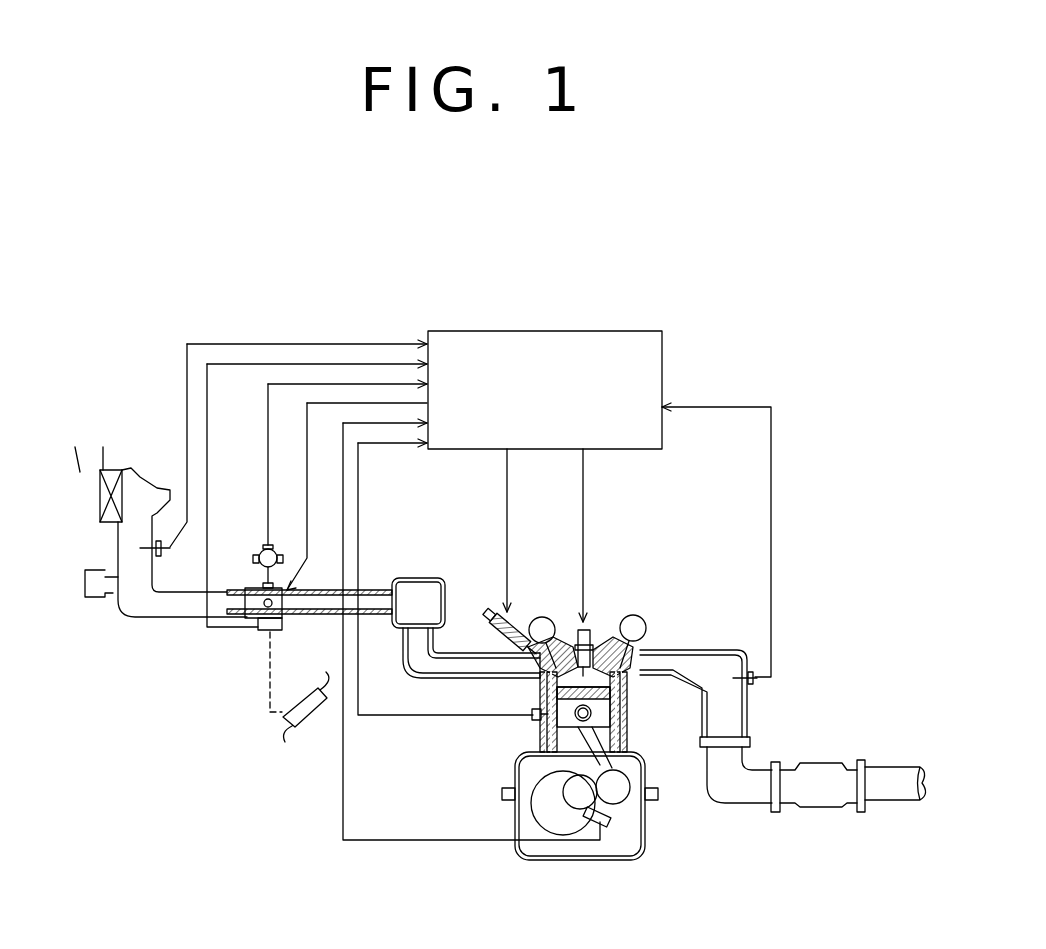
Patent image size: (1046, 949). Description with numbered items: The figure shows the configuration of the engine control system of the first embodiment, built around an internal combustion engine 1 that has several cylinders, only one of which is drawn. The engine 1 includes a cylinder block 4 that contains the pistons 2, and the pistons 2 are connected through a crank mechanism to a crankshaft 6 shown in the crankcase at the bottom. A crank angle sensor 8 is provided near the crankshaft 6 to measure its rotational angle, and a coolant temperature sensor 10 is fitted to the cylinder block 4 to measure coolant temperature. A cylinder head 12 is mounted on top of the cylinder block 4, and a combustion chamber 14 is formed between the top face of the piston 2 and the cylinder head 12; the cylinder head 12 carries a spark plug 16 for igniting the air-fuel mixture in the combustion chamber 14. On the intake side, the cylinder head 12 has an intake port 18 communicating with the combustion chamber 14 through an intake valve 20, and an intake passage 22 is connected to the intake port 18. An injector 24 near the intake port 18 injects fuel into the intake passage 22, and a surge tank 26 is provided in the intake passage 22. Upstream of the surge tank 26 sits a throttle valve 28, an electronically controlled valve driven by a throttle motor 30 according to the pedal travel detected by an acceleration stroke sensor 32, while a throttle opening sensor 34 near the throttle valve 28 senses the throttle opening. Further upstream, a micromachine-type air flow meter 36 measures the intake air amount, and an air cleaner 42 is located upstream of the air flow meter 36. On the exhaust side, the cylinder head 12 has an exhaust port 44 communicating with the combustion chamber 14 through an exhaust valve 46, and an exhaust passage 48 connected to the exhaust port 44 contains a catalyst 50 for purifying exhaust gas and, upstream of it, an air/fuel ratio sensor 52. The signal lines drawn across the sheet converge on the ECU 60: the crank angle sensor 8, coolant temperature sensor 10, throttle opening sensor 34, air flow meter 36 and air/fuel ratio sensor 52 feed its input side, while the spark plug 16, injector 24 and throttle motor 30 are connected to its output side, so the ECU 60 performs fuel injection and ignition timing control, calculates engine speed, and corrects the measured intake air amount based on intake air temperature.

The internal combustion engine 1 is at (631, 860).
The piston 2 is at (627, 737).
The cylinder block 4 is at (547, 740).
The crankshaft 6 is at (558, 780).
The crank angle sensor 8 is at (608, 810).
The coolant temperature sensor 10 is at (540, 715).
The cylinder head 12 is at (548, 618).
The combustion chamber 14 is at (630, 697).
The spark plug 16 is at (604, 614).
The intake port 18 is at (543, 670).
The intake valve 20 is at (487, 665).
The intake passage 22 is at (415, 677).
The injector 24 is at (503, 618).
The surge tank 26 is at (422, 580).
The throttle valve 28 is at (282, 613).
The throttle motor 30 is at (237, 600).
The acceleration stroke sensor 32 is at (262, 630).
The throttle opening sensor 34 is at (262, 548).
The air flow meter 36 is at (161, 554).
The air cleaner 42 is at (116, 468).
The exhaust port 44 is at (679, 654).
The exhaust valve 46 is at (645, 655).
The exhaust passage 48 is at (715, 651).
The catalyst 50 is at (818, 807).
The air/fuel ratio sensor 52 is at (755, 683).
The ECU 60 is at (550, 331).